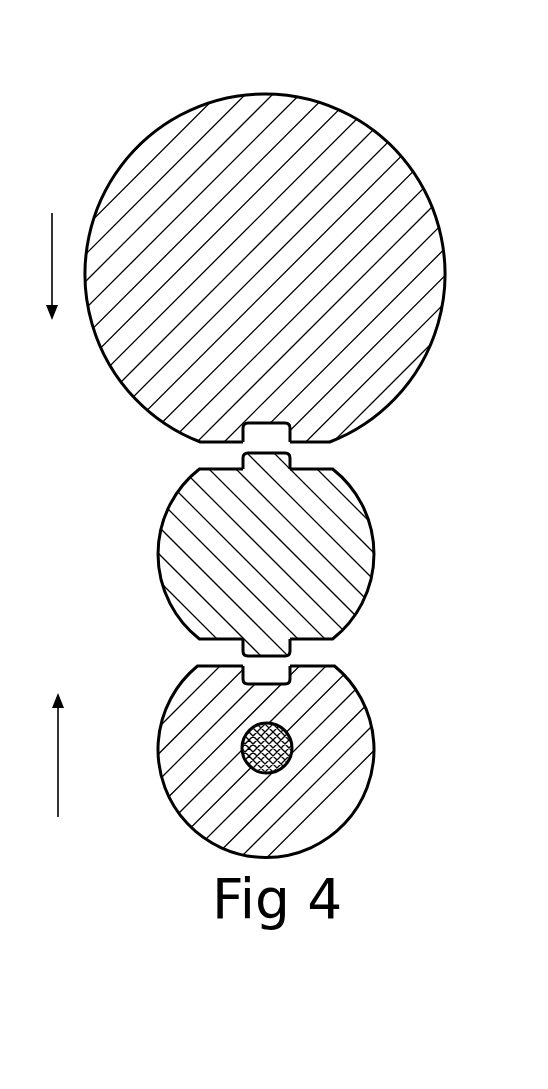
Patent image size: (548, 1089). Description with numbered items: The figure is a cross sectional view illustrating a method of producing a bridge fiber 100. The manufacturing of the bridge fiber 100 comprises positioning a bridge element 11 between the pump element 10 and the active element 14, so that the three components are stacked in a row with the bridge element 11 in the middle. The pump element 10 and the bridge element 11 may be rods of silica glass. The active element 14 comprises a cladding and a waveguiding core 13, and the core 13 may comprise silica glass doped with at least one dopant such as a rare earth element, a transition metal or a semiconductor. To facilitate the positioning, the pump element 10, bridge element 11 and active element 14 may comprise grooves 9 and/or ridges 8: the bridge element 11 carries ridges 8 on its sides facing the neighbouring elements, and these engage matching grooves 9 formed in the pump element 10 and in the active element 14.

The bridge fiber 100 is at (221, 57).
The pump element 10 is at (118, 173).
The bridge element 11 is at (160, 549).
The active element 14 is at (161, 760).
The core 13 is at (293, 750).
The grooves 9 is at (268, 422).
The ridges 8 is at (262, 458).